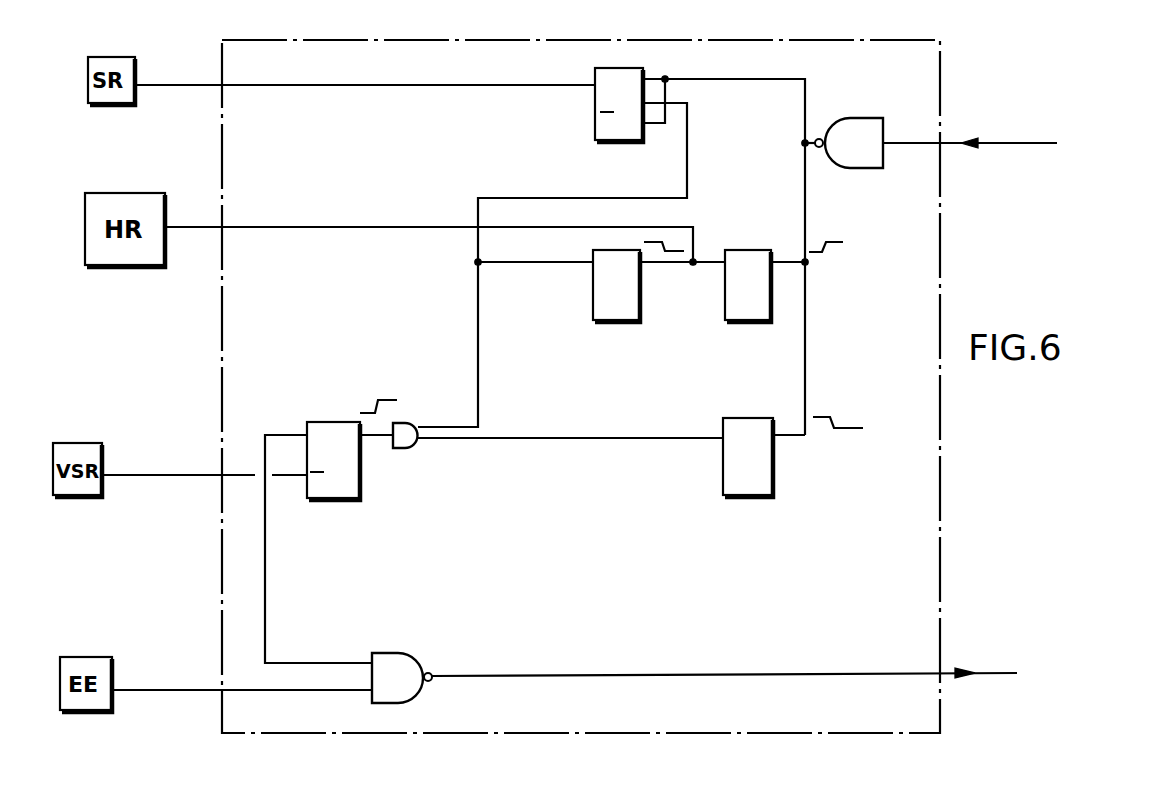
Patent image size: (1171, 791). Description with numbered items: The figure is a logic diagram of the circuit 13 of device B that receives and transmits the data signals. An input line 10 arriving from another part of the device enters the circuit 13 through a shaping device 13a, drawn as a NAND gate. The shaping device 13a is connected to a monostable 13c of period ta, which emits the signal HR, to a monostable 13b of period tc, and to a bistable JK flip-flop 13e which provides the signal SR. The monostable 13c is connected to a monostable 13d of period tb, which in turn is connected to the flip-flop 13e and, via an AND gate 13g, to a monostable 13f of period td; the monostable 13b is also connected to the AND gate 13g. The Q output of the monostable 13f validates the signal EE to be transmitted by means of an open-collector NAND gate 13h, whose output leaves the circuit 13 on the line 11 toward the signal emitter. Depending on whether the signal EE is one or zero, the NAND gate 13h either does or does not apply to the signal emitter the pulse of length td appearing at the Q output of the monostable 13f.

The circuit 13 is at (661, 709).
The shaping device 13a is at (862, 127).
The monostable 13b is at (760, 478).
The monostable 13c is at (745, 311).
The monostable 13d is at (616, 320).
The bistable flip-flop 13e is at (617, 70).
The monostable 13f is at (345, 422).
The AND gate 13g is at (405, 450).
The open-collector NAND gate 13h is at (393, 668).
The input line from FIG. 4 10 is at (1016, 132).
The signal emitter 11 is at (793, 664).